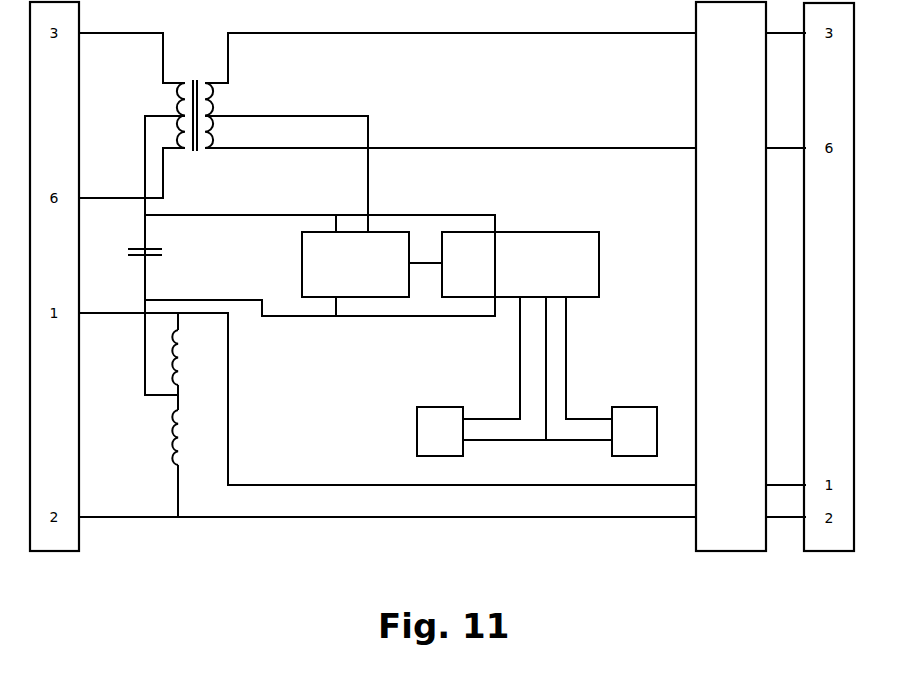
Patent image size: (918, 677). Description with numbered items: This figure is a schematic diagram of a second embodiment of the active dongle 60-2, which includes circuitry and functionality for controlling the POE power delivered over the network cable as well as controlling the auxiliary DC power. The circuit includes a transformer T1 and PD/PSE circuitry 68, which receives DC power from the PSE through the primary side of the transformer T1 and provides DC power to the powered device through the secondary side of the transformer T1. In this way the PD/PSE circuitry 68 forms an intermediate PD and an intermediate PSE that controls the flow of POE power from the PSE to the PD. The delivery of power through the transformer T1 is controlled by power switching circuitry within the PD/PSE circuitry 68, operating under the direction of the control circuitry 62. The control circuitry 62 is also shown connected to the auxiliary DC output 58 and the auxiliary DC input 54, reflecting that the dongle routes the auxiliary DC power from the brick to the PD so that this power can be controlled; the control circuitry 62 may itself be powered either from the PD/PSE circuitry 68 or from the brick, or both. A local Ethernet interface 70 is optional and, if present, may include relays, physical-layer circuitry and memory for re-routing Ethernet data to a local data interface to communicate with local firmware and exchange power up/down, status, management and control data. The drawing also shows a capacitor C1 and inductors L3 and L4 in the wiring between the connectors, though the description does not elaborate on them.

The active dongle 60-2 is at (264, 564).
The local Ethernet interface 70 is at (721, 306).
The PD/PSE circuitry 68 is at (345, 284).
The control circuitry 62 is at (548, 284).
The auxiliary DC output 58 is at (430, 440).
The auxiliary DC input 54 is at (624, 440).
The transformer T1 is at (195, 124).
The capacitor C1 is at (157, 257).
The inductor L3 is at (186, 357).
The inductor L4 is at (186, 437).